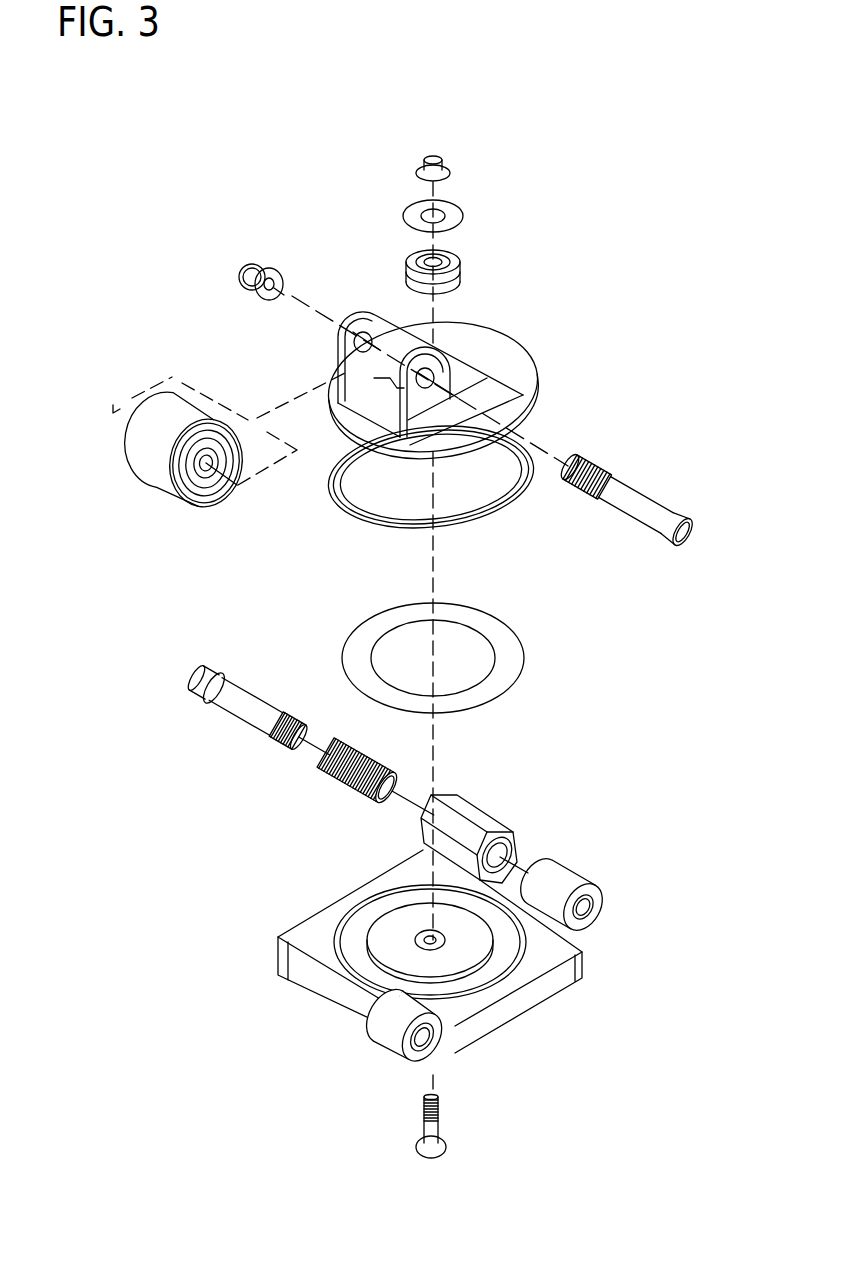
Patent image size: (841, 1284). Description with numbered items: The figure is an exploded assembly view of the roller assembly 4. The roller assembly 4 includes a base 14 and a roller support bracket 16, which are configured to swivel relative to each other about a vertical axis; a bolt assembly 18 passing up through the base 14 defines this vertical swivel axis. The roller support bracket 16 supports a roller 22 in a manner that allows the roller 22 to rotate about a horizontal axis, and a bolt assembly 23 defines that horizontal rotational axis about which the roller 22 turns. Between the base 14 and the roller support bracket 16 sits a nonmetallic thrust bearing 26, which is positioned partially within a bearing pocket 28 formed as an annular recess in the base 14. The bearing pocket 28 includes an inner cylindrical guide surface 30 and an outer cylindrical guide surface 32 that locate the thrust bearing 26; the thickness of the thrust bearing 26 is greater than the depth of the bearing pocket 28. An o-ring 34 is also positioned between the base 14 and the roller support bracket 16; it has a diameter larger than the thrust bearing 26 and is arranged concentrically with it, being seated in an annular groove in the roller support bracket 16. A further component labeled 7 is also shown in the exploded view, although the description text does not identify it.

The roller assembly 4 is at (622, 255).
The roller support bracket 16 is at (538, 384).
The roller 22 is at (125, 467).
The bolt assembly 23 is at (636, 491).
The o-ring 34 is at (333, 489).
The thrust bearing 26 is at (524, 657).
The bushing 7 is at (566, 880).
The outer cylindrical guide surface 32 is at (363, 907).
The base 14 is at (278, 957).
The bearing pocket 28 is at (495, 967).
The inner cylindrical guide surface 30 is at (462, 973).
The bolt assembly 18 is at (423, 1114).